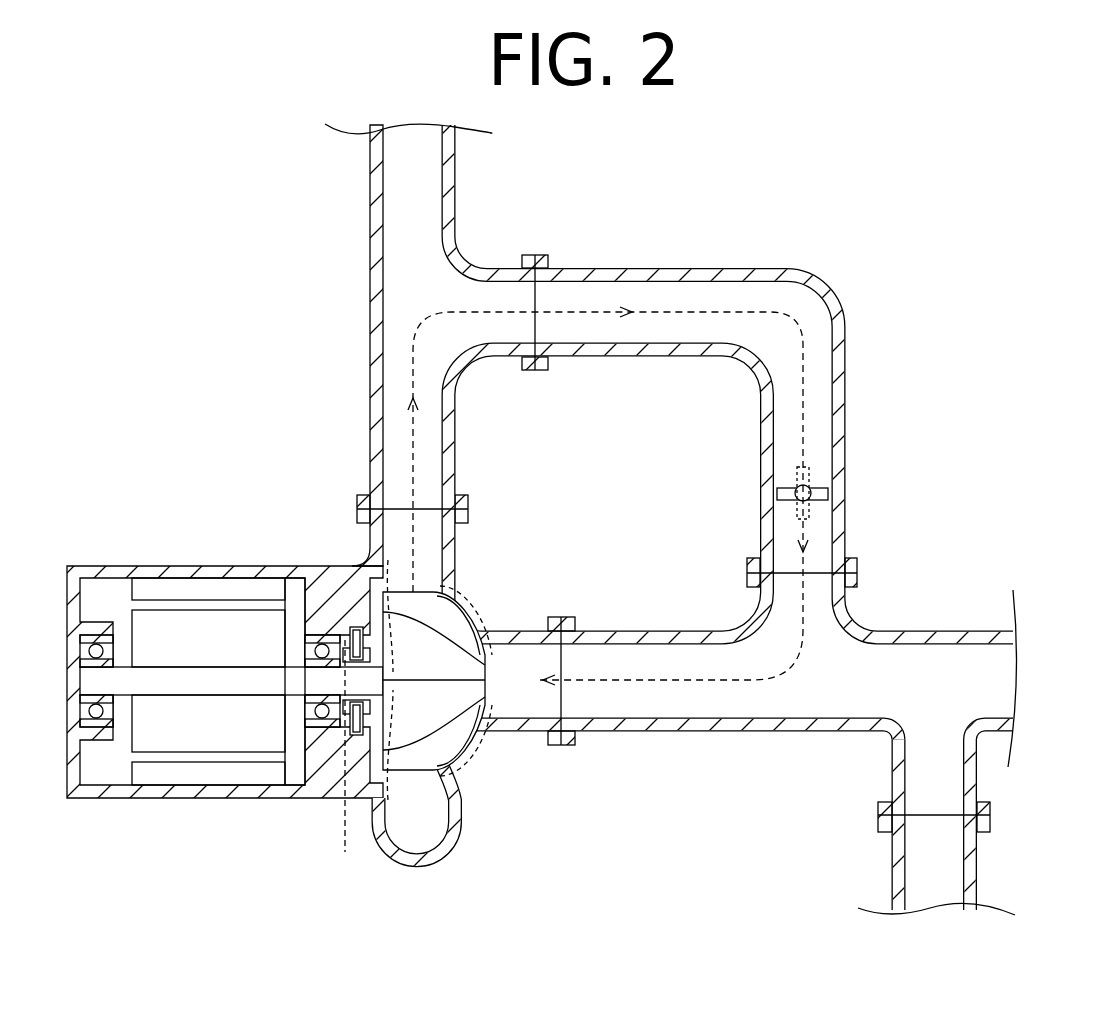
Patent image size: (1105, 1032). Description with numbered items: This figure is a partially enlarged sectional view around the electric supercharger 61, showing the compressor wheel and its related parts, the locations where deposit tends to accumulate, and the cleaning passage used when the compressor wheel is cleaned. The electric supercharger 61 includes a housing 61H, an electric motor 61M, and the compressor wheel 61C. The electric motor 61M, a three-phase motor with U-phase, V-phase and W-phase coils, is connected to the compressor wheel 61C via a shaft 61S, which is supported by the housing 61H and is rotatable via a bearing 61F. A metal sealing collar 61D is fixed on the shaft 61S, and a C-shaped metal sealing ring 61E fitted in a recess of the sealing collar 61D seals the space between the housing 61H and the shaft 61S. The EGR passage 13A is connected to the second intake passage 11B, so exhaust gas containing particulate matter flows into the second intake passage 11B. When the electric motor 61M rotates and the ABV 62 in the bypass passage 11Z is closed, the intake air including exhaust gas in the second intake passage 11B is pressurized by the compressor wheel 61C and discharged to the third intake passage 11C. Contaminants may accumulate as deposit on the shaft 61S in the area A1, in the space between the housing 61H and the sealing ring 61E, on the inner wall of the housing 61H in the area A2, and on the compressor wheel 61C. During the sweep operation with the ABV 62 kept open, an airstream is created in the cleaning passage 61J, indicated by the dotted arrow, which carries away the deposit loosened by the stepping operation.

The second intake passage 11B is at (672, 737).
The third intake passage 11C is at (367, 178).
The bypass passage 11Z is at (827, 282).
The EGR passage 13A is at (980, 852).
The electric supercharger 61 is at (468, 862).
The compressor wheel 61C is at (403, 760).
The sealing collar 61D is at (352, 652).
The sealing ring 61E is at (366, 632).
The bearing 61F is at (303, 640).
The housing 61H is at (322, 765).
The cleaning passage 61J is at (562, 310).
The electric motor 61M is at (233, 730).
The shaft 61S is at (205, 675).
The ABV 62 is at (813, 490).
The area A1 is at (343, 759).
The area A2 is at (460, 628).